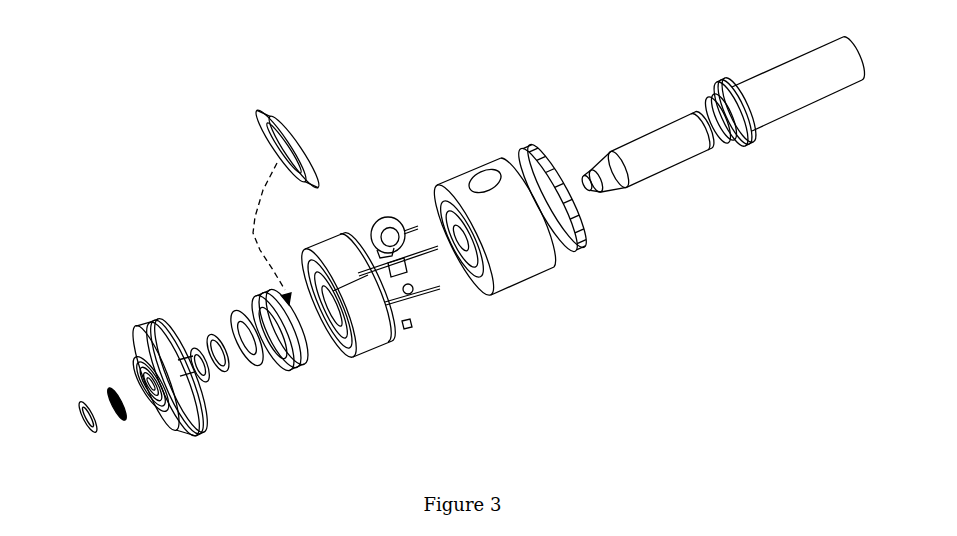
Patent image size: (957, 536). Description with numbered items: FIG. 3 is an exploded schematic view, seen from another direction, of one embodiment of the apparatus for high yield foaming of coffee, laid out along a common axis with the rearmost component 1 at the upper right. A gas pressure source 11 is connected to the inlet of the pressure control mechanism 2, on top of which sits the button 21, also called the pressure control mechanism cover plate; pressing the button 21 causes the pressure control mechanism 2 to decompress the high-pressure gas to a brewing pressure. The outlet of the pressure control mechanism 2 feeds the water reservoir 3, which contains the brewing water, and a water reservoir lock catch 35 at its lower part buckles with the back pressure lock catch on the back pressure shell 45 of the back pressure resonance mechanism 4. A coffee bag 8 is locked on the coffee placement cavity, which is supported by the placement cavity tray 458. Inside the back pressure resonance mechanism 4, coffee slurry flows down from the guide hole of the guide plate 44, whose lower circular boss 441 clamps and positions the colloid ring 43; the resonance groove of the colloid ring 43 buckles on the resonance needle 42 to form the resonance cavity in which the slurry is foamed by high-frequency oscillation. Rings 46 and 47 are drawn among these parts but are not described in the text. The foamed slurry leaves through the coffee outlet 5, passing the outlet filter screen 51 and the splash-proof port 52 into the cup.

The rear cylinder 1 is at (780, 76).
The gas pressure source 11 is at (648, 143).
The pressure control mechanism 2 is at (539, 310).
The button 21 is at (388, 217).
The water reservoir 3 is at (366, 275).
The water reservoir lock catch 35 is at (340, 357).
The coffee bag 8 is at (300, 138).
The back pressure resonance mechanism 4 is at (224, 355).
The resonance needle 42 is at (205, 381).
The colloid ring 43 is at (180, 340).
The guide plate 44 is at (225, 372).
The lower circular boss 441 is at (200, 347).
The back pressure shell 45 is at (180, 375).
The placement cavity tray 458 is at (294, 372).
The inner ring 46 is at (251, 340).
The outer ring 47 is at (232, 328).
The coffee outlet 5 is at (95, 379).
The outlet filter screen 51 is at (114, 387).
The splash-proof port 52 is at (83, 404).